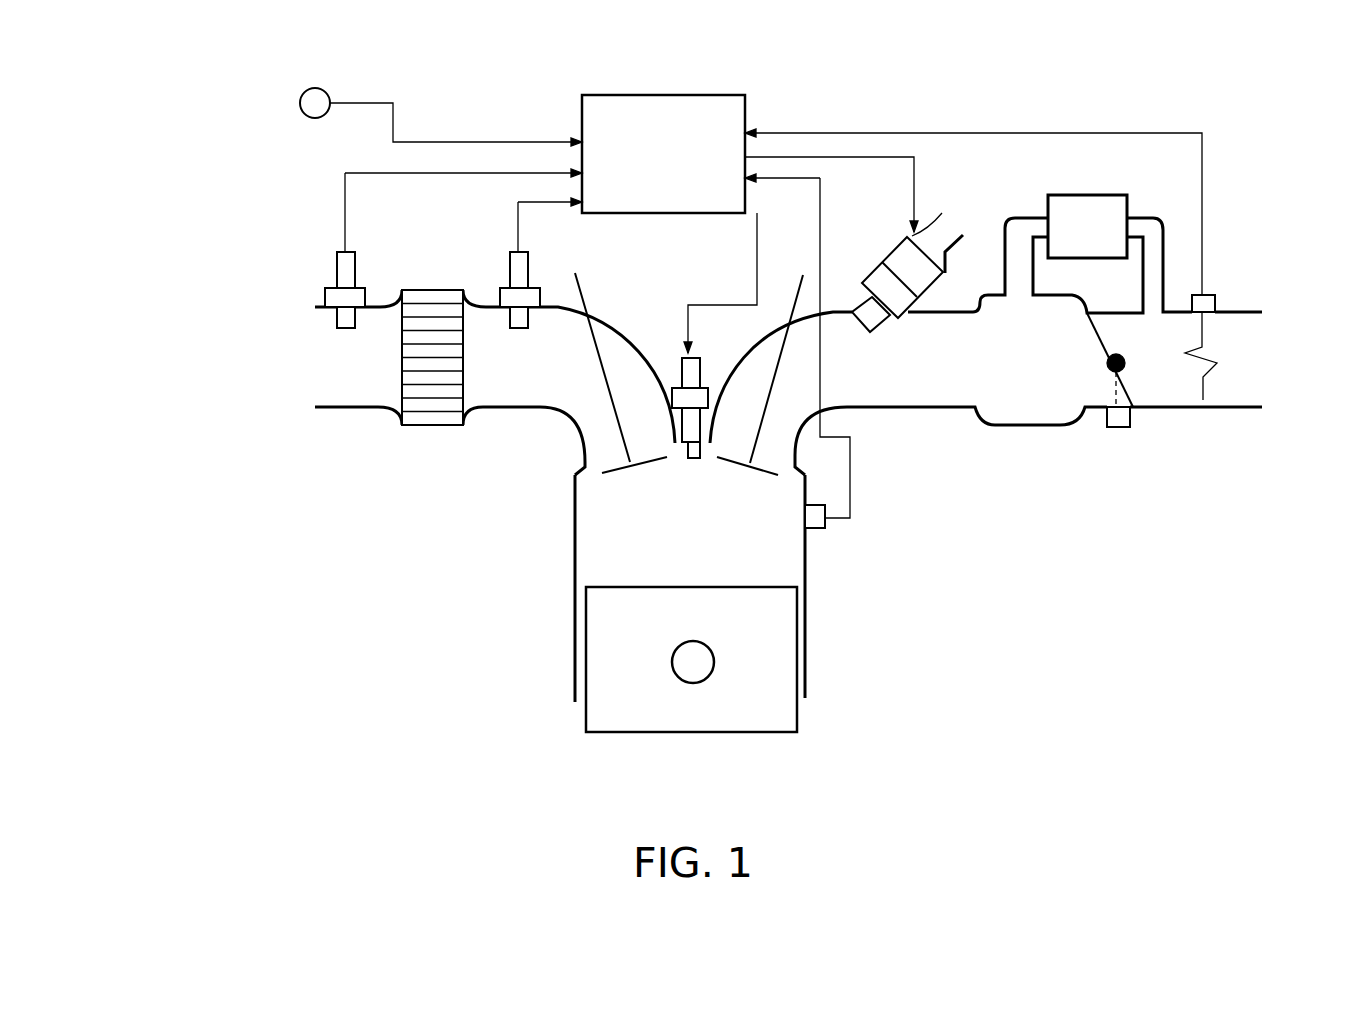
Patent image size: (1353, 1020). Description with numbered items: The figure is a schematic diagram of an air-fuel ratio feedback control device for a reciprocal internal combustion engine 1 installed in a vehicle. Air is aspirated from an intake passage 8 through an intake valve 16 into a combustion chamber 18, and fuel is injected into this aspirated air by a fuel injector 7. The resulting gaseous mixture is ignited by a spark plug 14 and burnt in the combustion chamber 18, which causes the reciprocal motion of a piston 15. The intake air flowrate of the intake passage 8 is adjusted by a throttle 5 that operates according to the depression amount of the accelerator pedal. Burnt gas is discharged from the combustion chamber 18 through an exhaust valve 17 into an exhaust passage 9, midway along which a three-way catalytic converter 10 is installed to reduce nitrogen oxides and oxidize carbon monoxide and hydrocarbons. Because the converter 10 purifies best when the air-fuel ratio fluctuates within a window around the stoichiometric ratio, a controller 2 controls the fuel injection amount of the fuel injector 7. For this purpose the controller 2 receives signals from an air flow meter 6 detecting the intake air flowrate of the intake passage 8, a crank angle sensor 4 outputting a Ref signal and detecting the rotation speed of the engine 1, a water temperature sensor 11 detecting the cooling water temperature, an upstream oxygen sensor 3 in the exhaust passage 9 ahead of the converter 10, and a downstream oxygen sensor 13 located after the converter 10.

The reciprocal internal combustion engine 1 is at (562, 592).
The controller 2 is at (724, 95).
The upstream oxygen sensor 3 is at (528, 265).
The crank angle sensor 4 is at (300, 103).
The throttle 5 is at (1097, 332).
The air flow meter 6 is at (1216, 303).
The fuel injector 7 is at (876, 263).
The intake passage 8 is at (940, 410).
The exhaust passage 9 is at (514, 410).
The three-way catalytic converter 10 is at (402, 363).
The water temperature sensor 11 is at (813, 530).
The downstream oxygen sensor 13 is at (335, 263).
The spark plug 14 is at (692, 470).
The piston 15 is at (585, 708).
The intake valve 16 is at (758, 470).
The exhaust valve 17 is at (607, 473).
The combustion chamber 18 is at (708, 573).